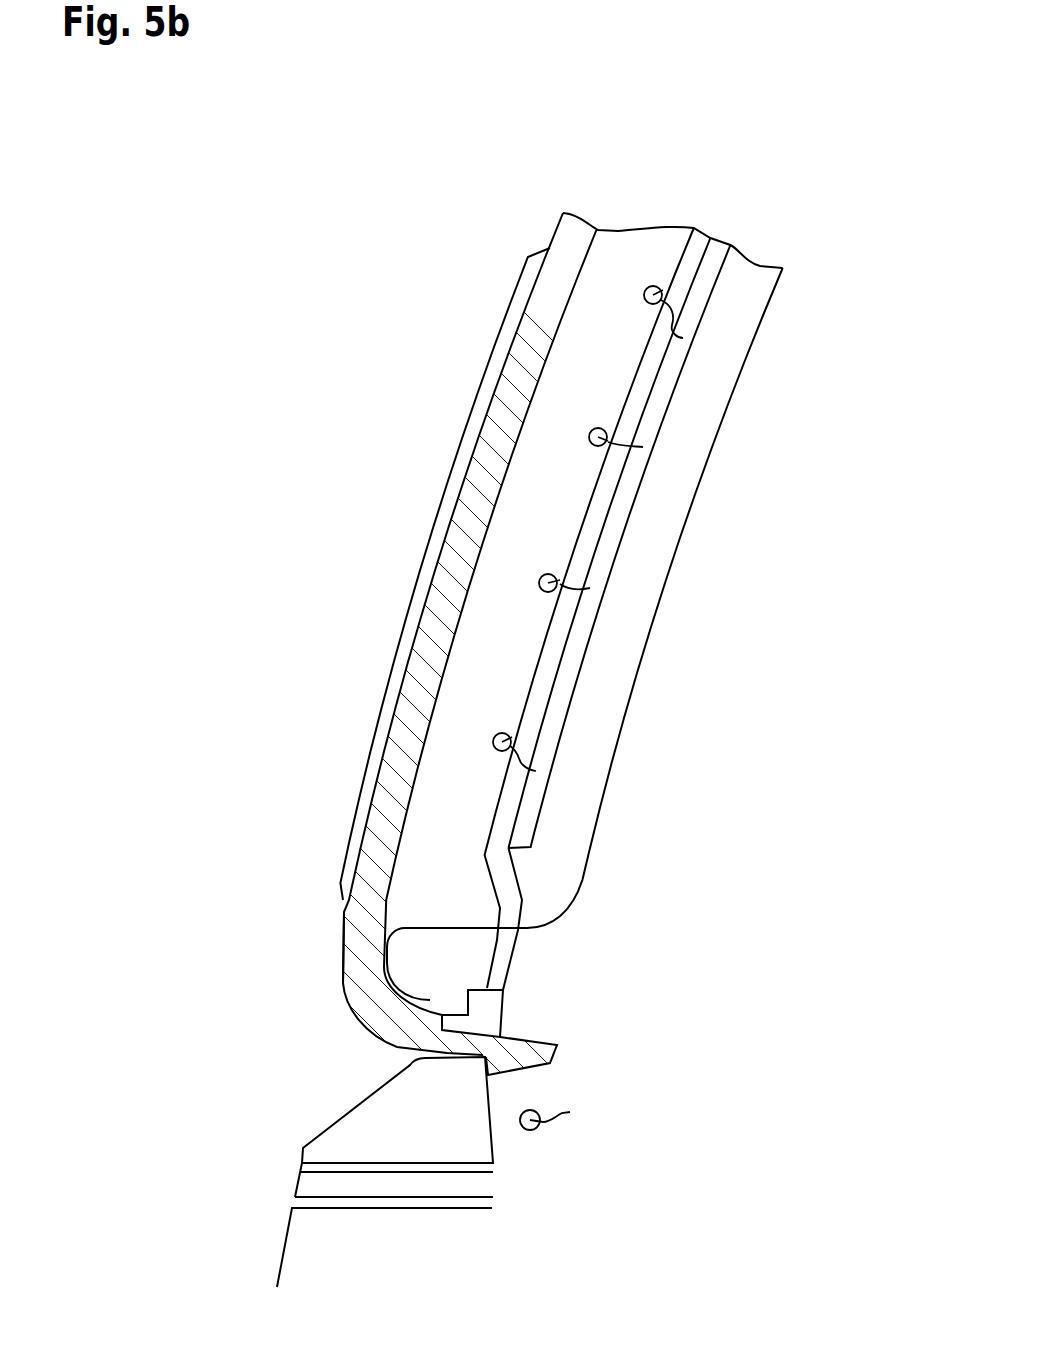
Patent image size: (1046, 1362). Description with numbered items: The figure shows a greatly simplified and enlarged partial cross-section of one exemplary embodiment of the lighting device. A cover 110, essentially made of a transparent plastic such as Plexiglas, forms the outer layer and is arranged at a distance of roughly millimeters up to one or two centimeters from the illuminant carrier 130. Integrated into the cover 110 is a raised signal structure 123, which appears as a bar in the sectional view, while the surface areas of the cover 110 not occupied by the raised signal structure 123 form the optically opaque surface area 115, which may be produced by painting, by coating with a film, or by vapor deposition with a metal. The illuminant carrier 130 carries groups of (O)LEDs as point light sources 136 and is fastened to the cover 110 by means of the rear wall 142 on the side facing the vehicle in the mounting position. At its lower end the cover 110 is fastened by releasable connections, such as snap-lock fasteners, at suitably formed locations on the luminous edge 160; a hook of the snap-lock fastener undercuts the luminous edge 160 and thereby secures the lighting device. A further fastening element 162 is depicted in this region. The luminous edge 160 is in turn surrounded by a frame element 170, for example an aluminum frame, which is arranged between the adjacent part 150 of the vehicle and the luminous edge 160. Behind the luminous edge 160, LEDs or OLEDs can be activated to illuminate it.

The cover 110 is at (487, 431).
The raised signal structure 123 is at (452, 492).
The optically opaque surface area 115 is at (332, 955).
The illuminant carrier 130 is at (568, 675).
The point light sources 136 is at (663, 290).
The rear wall 142 is at (597, 822).
The luminous edge 160 is at (342, 1128).
The fastening element 162 is at (533, 1129).
The frame element 170 is at (310, 1185).
The adjacent part 150 is at (293, 1257).